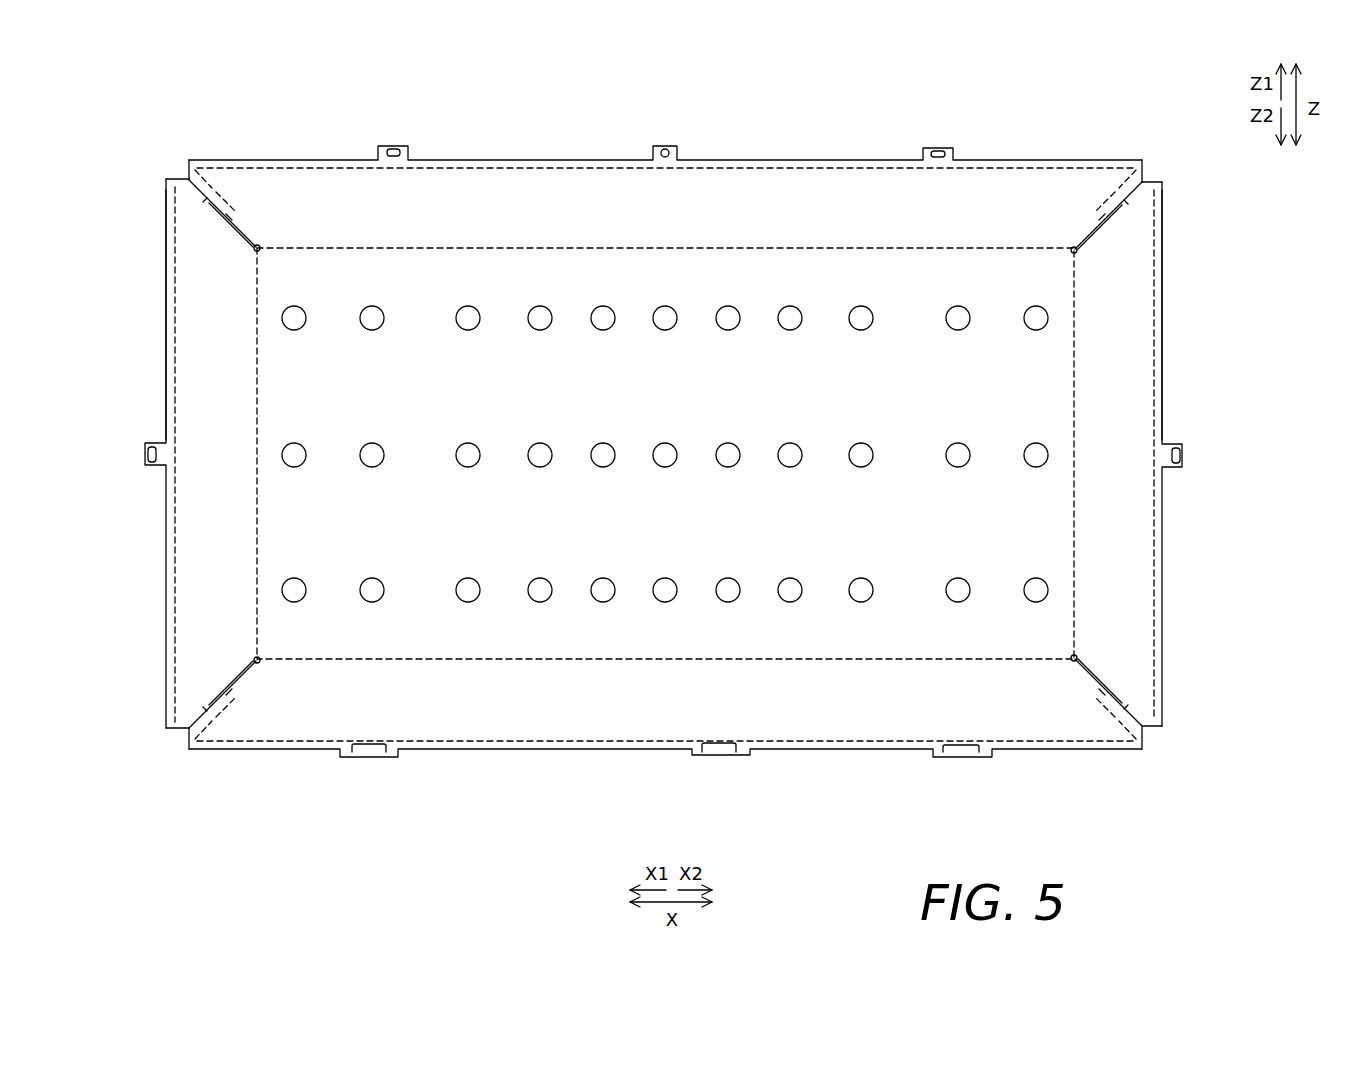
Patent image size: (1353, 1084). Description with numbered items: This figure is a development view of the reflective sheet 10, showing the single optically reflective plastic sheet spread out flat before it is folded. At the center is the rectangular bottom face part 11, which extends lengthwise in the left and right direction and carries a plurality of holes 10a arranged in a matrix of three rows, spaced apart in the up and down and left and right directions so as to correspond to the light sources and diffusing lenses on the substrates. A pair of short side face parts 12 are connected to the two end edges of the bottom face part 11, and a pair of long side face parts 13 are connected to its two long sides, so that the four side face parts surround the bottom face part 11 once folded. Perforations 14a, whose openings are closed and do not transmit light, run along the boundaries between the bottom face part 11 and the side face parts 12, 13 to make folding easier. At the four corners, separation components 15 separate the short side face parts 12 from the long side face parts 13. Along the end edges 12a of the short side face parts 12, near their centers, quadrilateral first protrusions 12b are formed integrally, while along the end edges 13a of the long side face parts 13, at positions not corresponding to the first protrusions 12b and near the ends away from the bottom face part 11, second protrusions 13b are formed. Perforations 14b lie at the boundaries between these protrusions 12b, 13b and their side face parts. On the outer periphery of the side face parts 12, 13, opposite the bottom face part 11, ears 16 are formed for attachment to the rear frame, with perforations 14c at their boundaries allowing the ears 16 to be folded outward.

The reflective sheet 10 is at (184, 121).
The holes 10a is at (294, 330).
The bottom face part 11 is at (830, 292).
The short side face parts 12 is at (1128, 365).
The end edges of the short side face parts 12a is at (186, 184).
The first protrusions 12b is at (229, 222).
The long side face parts 13 is at (503, 195).
The end edges of the long side face parts 13a is at (244, 237).
The second protrusions 13b is at (205, 190).
The perforations 14a is at (700, 248).
The perforations 14b is at (214, 197).
The perforations 14c is at (640, 168).
The separation components 15 is at (183, 167).
The ears 16 is at (598, 163).